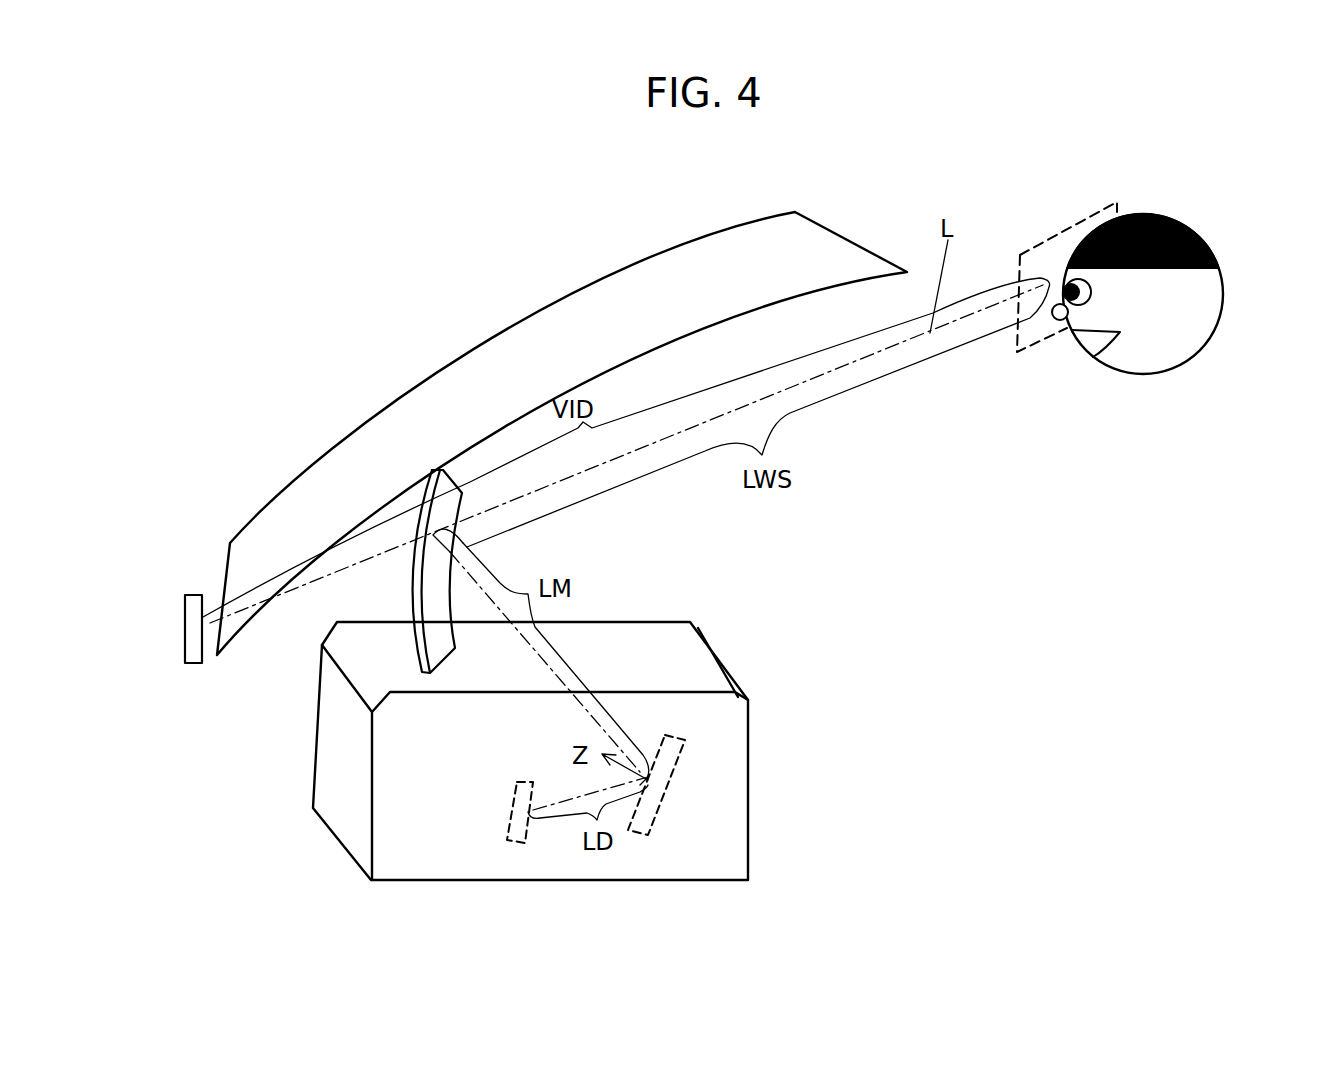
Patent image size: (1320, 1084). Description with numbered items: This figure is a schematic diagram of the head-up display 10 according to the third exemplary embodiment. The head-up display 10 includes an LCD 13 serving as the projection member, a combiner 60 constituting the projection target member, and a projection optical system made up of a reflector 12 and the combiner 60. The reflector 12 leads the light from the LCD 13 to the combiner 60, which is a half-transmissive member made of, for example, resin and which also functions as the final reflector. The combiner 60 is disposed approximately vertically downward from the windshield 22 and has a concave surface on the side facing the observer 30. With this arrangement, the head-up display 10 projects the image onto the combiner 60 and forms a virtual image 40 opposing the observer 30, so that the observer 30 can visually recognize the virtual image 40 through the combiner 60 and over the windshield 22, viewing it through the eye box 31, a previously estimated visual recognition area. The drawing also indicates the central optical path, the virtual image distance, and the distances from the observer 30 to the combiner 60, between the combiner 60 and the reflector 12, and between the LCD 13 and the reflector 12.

The head-up display 10 is at (293, 787).
The reflector 12 is at (667, 787).
The LCD 13 is at (508, 813).
The windshield 22 is at (718, 248).
The observer 30 is at (1207, 238).
The eye box 31 is at (1067, 228).
The virtual image 40 is at (185, 662).
The combiner 60 is at (432, 490).